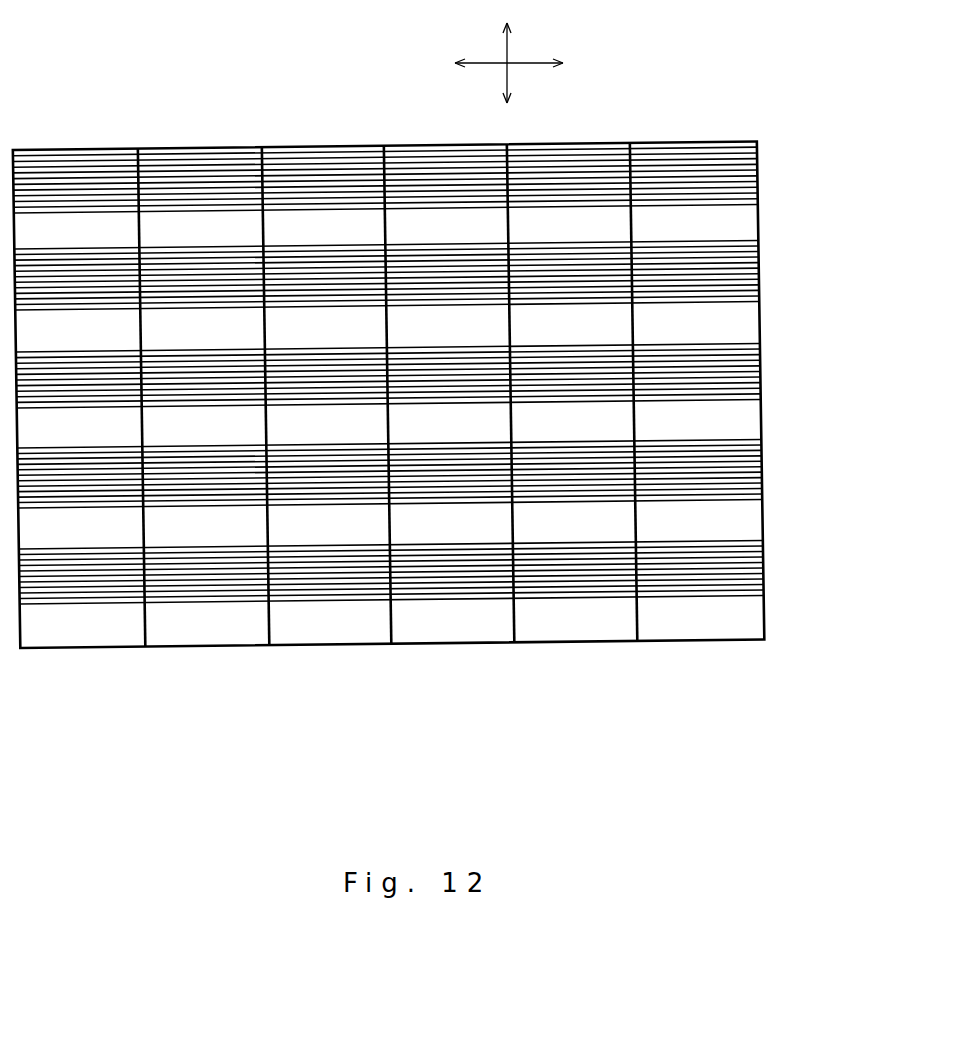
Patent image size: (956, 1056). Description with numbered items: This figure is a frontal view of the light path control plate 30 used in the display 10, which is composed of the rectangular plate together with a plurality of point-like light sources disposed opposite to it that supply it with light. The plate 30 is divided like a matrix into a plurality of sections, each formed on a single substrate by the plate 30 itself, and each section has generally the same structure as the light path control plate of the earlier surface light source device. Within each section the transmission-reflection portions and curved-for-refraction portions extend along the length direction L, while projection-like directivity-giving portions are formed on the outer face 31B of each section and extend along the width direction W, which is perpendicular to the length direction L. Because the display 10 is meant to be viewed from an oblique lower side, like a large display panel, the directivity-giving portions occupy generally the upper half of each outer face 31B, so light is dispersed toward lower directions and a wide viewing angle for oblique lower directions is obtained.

The display 10 is at (609, 93).
The light path control plate 30 is at (422, 359).
The outer face 31B is at (735, 223).
The length direction L is at (507, 45).
The width direction W is at (527, 63).